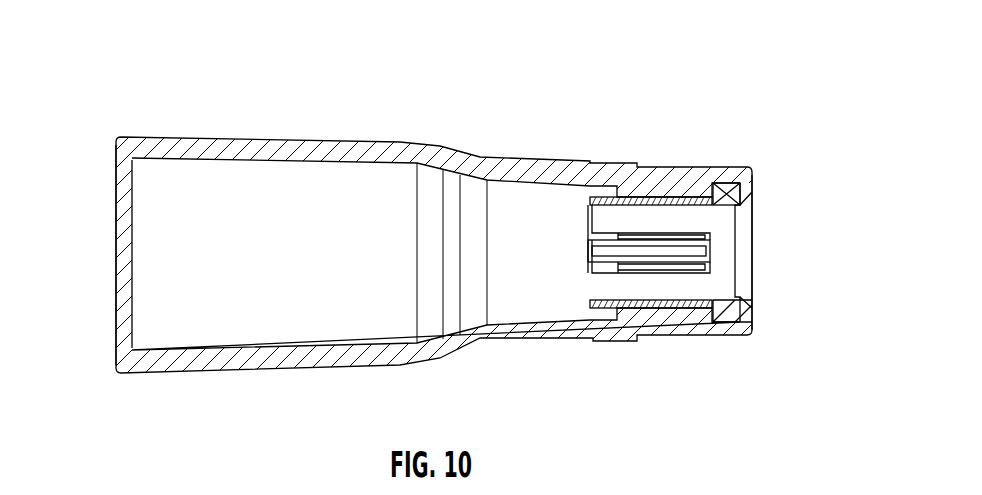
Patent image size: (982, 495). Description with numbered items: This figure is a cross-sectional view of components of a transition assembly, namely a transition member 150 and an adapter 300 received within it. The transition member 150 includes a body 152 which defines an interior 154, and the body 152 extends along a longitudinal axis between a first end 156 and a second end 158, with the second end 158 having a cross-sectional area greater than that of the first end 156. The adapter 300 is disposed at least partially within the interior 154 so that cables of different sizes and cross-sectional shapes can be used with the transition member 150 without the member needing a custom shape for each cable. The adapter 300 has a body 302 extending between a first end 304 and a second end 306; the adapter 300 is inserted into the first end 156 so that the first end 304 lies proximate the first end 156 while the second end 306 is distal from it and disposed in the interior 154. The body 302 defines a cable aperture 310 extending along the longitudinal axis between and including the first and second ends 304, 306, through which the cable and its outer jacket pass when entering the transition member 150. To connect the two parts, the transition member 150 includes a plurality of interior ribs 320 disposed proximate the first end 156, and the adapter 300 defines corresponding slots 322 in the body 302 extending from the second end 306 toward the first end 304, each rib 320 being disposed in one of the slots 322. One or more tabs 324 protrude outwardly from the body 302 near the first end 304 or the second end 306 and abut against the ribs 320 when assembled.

The transition member 150 is at (396, 105).
The body 152 is at (497, 158).
The interior 154 is at (365, 276).
The first end 156 is at (772, 322).
The second end 158 is at (102, 167).
The adapter 300 is at (722, 308).
The body 302 is at (697, 283).
The first end 304 is at (766, 227).
The second end 306 is at (582, 233).
The cable aperture 310 is at (737, 258).
The interior ribs 320 is at (688, 197).
The slots 322 is at (602, 270).
The tabs 324 is at (746, 167).